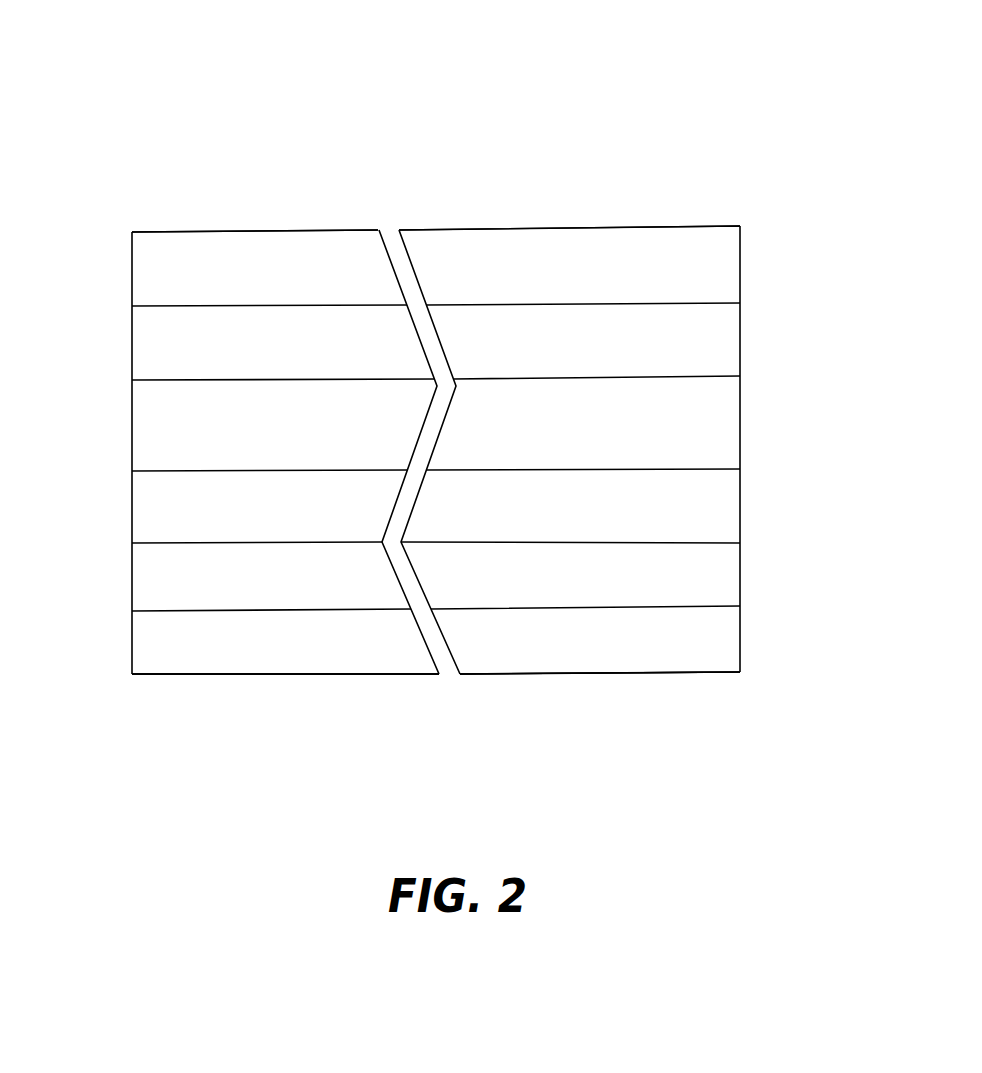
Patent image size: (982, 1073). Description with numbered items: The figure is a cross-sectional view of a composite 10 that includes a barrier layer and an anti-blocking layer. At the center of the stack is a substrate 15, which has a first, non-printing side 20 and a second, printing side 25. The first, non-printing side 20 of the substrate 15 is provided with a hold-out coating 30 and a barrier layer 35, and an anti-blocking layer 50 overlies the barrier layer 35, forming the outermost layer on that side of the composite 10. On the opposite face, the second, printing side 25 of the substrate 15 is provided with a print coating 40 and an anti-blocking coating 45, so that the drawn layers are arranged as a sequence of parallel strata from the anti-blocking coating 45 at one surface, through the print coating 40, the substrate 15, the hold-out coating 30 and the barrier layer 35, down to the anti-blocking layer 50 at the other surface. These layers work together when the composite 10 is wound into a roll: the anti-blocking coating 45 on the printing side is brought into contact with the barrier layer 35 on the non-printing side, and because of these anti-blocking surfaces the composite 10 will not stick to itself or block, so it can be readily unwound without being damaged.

The composite 10 is at (705, 105).
The substrate 15 is at (713, 412).
The first, non-printing side 20 is at (150, 718).
The second, printing side 25 is at (169, 212).
The hold-out coating 30 is at (717, 513).
The barrier layer 35 is at (717, 578).
The print coating 40 is at (710, 353).
The anti-blocking coating 45 is at (713, 253).
The anti-blocking layer 50 is at (717, 653).